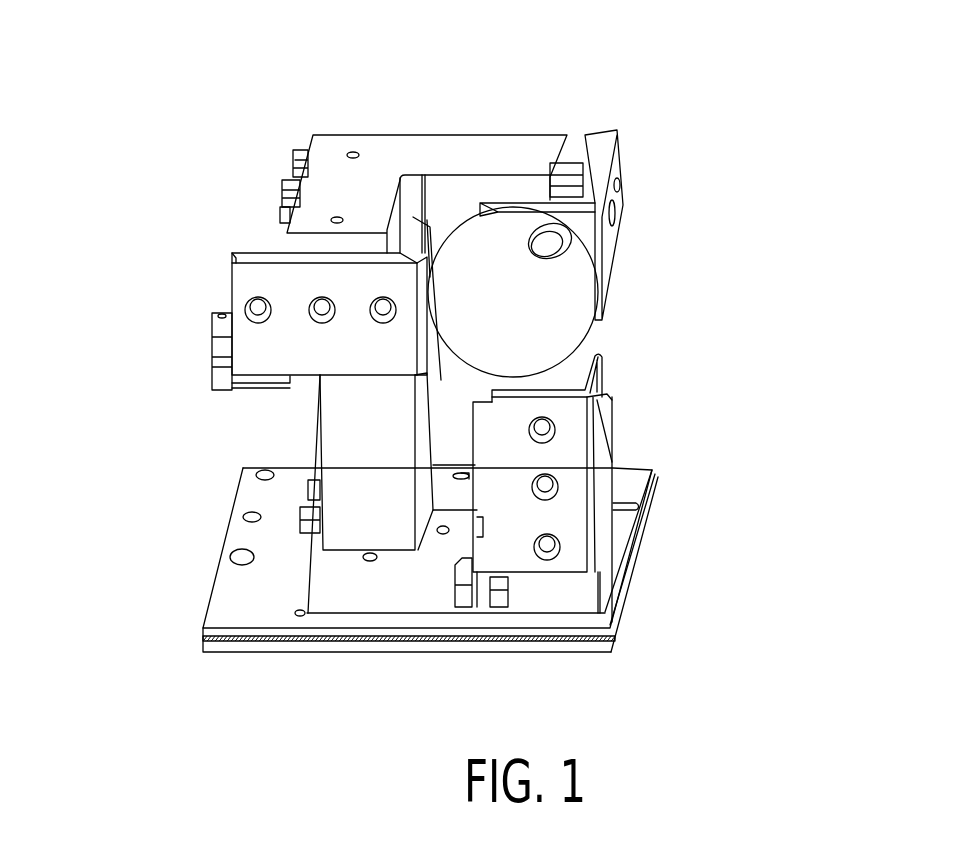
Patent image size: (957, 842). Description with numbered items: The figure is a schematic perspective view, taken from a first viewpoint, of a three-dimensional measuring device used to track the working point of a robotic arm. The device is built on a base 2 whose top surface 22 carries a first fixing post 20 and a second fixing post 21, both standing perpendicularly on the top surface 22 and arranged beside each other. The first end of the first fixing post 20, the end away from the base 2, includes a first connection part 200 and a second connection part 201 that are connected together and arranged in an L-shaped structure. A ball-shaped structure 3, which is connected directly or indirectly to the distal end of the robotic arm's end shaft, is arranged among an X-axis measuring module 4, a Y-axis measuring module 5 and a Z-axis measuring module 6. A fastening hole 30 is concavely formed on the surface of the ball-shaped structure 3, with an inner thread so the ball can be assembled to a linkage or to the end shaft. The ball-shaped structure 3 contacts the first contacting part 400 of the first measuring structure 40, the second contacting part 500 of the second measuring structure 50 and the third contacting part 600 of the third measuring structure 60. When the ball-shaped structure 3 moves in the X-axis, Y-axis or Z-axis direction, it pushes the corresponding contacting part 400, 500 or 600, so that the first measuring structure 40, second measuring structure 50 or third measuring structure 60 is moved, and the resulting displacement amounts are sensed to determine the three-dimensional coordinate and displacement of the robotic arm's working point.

The base 2 is at (388, 598).
The top surface 22 is at (284, 617).
The first fixing post 20 is at (357, 342).
The second connection part 201 is at (455, 135).
The first connection part 200 is at (308, 222).
The X-axis measuring module 4 is at (270, 335).
The first measuring structure 40 is at (210, 382).
The ball-shaped structure 3 is at (564, 293).
The fastening hole 30 is at (607, 253).
The Y-axis measuring module 5 is at (593, 208).
The second measuring structure 50 is at (622, 182).
The second contacting part 500 is at (583, 218).
The first contacting part 400 is at (432, 330).
The Z-axis measuring module 6 is at (612, 443).
The third contacting part 600 is at (592, 366).
The third measuring structure 60 is at (591, 470).
The second fixing post 21 is at (587, 585).